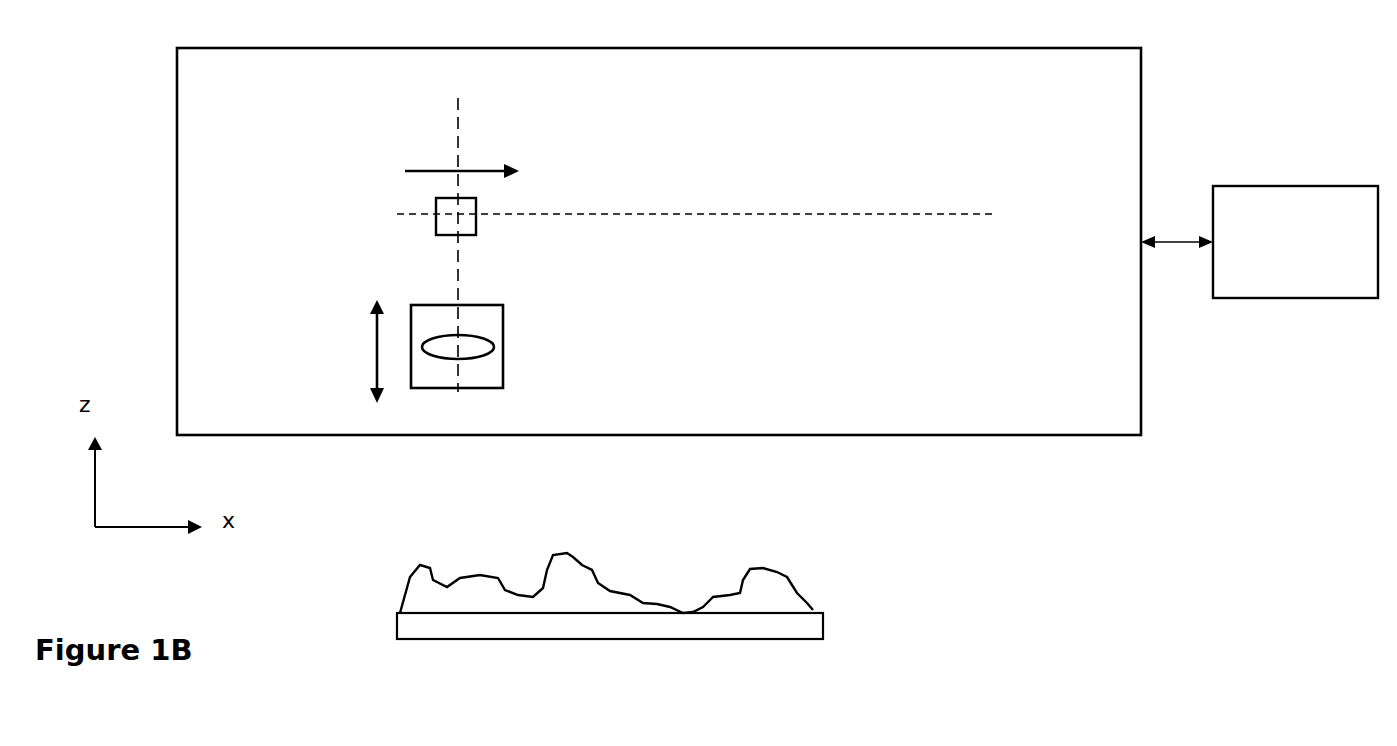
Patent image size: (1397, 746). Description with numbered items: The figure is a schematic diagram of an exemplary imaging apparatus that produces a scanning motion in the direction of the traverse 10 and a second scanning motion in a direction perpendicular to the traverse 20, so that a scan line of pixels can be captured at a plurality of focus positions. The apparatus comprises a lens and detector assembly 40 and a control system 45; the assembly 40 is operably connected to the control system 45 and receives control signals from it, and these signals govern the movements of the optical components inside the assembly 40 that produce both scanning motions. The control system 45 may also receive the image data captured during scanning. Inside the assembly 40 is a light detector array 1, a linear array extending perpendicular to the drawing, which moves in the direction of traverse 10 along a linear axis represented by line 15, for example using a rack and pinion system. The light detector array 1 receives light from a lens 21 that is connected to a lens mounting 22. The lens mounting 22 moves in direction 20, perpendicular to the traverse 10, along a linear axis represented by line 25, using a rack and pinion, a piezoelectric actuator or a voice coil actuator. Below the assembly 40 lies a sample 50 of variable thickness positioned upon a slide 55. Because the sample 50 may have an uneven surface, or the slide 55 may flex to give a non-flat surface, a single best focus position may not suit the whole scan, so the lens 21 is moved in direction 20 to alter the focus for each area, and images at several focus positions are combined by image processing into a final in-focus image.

The light detector array 1 is at (436, 216).
The direction of traverse 10 is at (480, 169).
The line representing the linear axis of movement 15 is at (1032, 195).
The direction perpendicular to the traverse 20 is at (373, 362).
The lens 21 is at (490, 352).
The lens mounting 22 is at (503, 313).
The line representing the linear axis of lens movement 25 is at (455, 152).
The lens and detector assembly 40 is at (1127, 435).
The control system 45 is at (1295, 186).
The sample 50 is at (785, 570).
The slide 55 is at (823, 630).